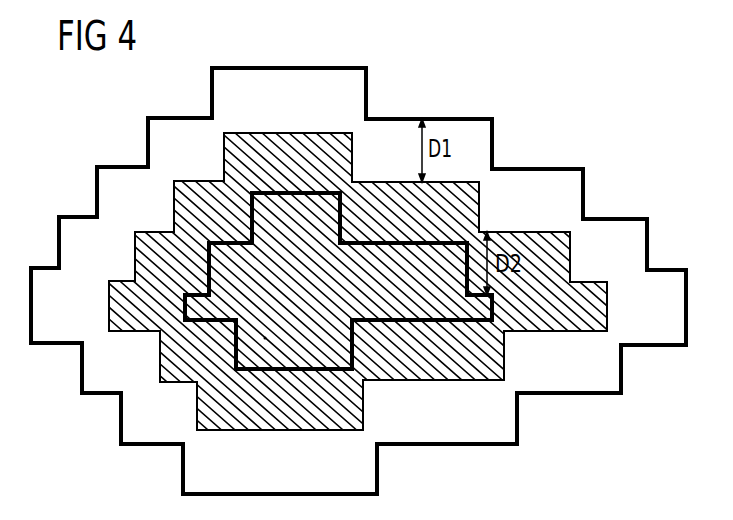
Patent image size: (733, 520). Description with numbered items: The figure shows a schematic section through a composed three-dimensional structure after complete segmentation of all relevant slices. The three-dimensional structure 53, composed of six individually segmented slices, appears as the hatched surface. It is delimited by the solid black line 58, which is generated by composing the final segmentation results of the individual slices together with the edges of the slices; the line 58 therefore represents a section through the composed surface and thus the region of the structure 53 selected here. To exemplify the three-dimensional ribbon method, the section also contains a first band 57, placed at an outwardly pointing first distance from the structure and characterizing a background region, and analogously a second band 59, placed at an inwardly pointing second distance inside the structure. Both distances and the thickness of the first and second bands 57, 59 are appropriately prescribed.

The 3D structure 53 is at (290, 138).
The first band 57 is at (466, 119).
The solid black line 58 is at (195, 396).
The second band 59 is at (464, 322).